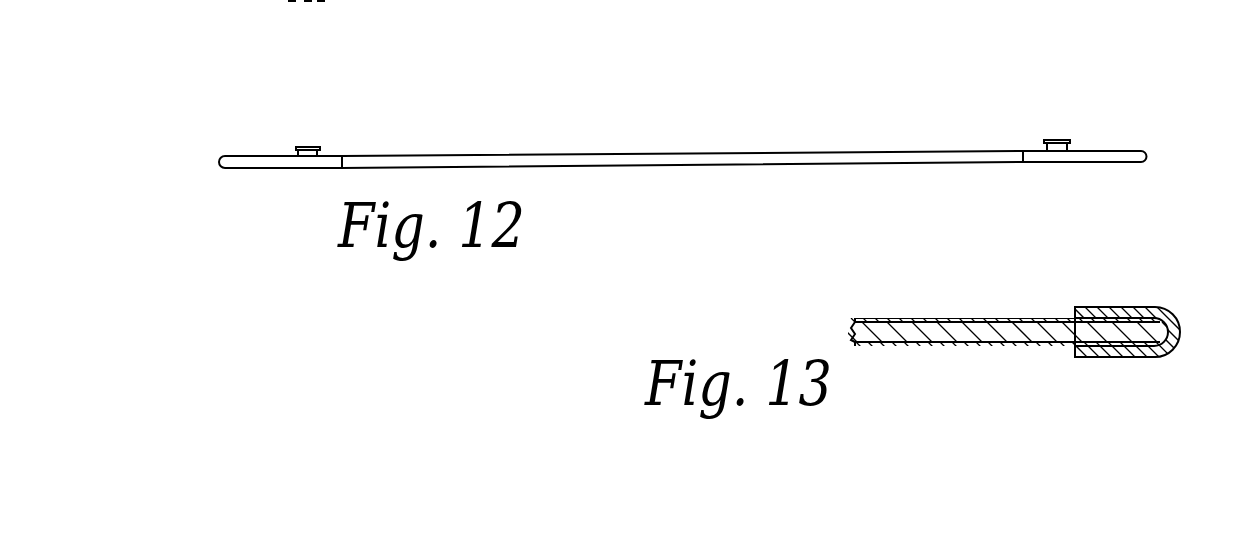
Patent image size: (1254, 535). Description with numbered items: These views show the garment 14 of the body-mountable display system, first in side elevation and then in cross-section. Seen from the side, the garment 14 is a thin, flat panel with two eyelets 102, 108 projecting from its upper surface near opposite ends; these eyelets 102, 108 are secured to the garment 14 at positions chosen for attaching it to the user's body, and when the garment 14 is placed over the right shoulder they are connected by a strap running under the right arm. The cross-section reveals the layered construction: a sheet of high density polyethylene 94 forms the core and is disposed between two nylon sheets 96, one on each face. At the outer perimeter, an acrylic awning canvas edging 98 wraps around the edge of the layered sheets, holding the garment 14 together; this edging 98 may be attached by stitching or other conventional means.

In FIG. 12, the garment 14 is at (982, 119).
In FIG. 12, the eyelet 108 is at (307, 147).
In FIG. 12, the eyelet 102 is at (1060, 140).
In FIG. 13, the sheet of high density polyethylene 94 is at (980, 323).
In FIG. 13, the nylon sheets 96 is at (938, 313).
In FIG. 13, the acrylic awning canvas edging 98 is at (1158, 308).